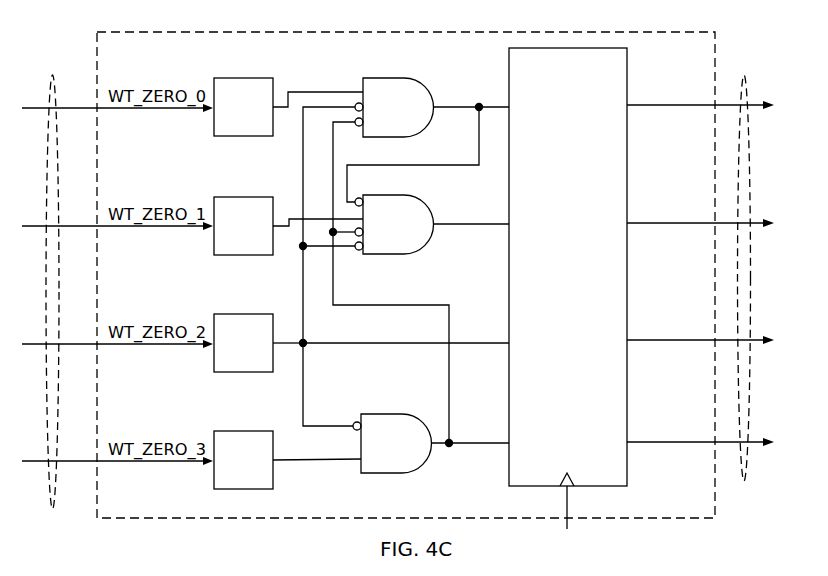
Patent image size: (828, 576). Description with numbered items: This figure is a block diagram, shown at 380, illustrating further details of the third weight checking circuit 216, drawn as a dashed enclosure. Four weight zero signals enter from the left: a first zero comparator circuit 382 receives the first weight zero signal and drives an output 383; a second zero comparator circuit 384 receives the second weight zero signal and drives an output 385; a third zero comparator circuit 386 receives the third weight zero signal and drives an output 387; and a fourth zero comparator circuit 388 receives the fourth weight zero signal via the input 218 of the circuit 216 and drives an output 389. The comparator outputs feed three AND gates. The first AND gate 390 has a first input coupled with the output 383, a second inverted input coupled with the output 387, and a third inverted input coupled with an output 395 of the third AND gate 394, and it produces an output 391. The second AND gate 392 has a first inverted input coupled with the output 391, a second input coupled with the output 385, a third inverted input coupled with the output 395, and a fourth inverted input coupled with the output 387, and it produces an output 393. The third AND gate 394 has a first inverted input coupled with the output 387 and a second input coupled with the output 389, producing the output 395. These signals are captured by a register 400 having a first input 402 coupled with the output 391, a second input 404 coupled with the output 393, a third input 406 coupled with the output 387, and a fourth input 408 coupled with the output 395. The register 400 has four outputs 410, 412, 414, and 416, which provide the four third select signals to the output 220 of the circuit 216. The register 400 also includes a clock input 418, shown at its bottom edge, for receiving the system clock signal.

The third weight checking circuit 216 is at (688, 32).
The input of circuit 216 218 is at (53, 514).
The output of circuit 216 220 is at (744, 482).
The weight checking circuit block diagram 380 is at (63, 29).
The first zero comparator circuit 382 is at (244, 78).
The output of first zero comparator circuit 383 is at (276, 137).
The second zero comparator circuit 384 is at (222, 197).
The output of second zero comparator circuit 385 is at (276, 197).
The third zero comparator circuit 386 is at (221, 314).
The output of third zero comparator circuit 387 is at (276, 372).
The fourth zero comparator circuit 388 is at (221, 431).
The output of fourth zero comparator circuit 389 is at (276, 489).
The first AND gate 390 is at (392, 78).
The output of first AND gate 391 is at (436, 114).
The second AND gate 392 is at (397, 254).
The output of second AND gate 393 is at (440, 195).
The third AND gate 394 is at (410, 473).
The output of third AND gate 395 is at (434, 438).
The register 400 is at (568, 267).
The first input of register 402 is at (507, 106).
The second input of register 404 is at (507, 224).
The third input of register 406 is at (507, 343).
The fourth input of register 408 is at (507, 442).
The first output of register 410 is at (628, 106).
The second output of register 412 is at (628, 224).
The third output of register 414 is at (628, 341).
The fourth output of register 416 is at (628, 443).
The clock input 418 is at (563, 487).